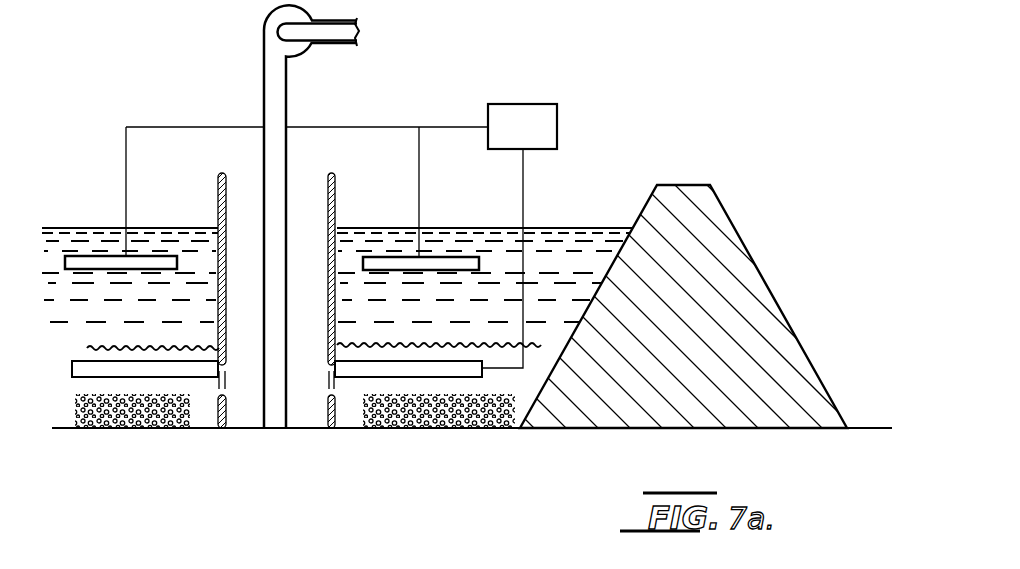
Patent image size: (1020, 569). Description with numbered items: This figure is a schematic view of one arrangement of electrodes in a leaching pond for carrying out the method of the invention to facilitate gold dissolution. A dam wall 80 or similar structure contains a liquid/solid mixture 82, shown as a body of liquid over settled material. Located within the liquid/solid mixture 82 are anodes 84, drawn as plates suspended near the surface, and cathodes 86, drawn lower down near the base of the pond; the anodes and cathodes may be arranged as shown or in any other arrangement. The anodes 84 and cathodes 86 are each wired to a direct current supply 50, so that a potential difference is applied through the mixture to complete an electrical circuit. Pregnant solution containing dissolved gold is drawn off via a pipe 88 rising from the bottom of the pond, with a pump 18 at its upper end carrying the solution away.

The pump 18 is at (263, 37).
The direct current supply 50 is at (532, 118).
The dam wall 80 is at (708, 184).
The liquid/solid mixture 82 is at (566, 226).
The anodes 84 is at (157, 265).
The cathodes 86 is at (142, 372).
The pipe 88 is at (274, 408).